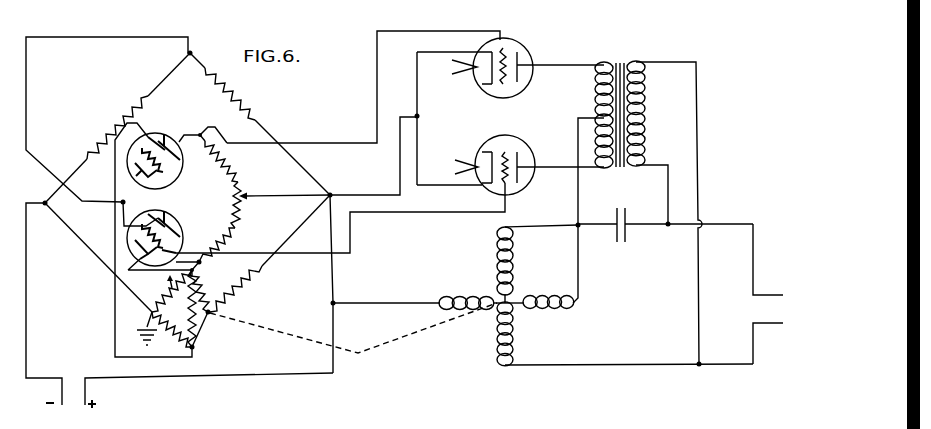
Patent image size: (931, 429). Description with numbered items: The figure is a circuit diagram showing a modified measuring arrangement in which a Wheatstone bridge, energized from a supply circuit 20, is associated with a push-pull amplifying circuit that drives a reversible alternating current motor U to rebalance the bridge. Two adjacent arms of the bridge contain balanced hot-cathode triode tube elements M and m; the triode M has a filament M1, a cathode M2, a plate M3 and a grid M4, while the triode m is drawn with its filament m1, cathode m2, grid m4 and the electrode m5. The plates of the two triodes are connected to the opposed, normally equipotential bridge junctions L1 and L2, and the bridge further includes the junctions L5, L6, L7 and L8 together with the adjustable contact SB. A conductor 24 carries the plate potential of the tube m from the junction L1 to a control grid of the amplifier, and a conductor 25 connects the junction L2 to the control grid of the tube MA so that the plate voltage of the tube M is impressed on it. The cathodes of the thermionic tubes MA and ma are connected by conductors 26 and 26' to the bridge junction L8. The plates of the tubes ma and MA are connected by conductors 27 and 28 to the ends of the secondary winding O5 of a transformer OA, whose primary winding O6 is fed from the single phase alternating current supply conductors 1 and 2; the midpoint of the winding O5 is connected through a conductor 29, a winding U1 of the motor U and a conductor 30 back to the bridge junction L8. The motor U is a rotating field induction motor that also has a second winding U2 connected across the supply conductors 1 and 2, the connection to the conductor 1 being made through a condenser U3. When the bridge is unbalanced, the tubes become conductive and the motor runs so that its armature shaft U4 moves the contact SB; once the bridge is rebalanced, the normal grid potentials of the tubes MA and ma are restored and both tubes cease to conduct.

The supply circuit 20 is at (26, 102).
The conductor 24 is at (377, 82).
The conductor 25 is at (410, 213).
The conductor 26 is at (373, 156).
The conductor 26' is at (449, 118).
The conductor 27 is at (573, 64).
The conductor 28 is at (548, 166).
The conductor 29 is at (580, 194).
The conductor 30 is at (372, 303).
The supply conductor 1 is at (755, 282).
The supply conductor 2 is at (756, 336).
The bridge junction L1 is at (200, 135).
The bridge junction L2 is at (200, 264).
The bridge junction L5 is at (192, 52).
The bridge junction L6 is at (195, 349).
The bridge junction L7 is at (45, 206).
The bridge junction L8 is at (338, 187).
The contact SB is at (214, 310).
The triode tube element m is at (147, 138).
The filament m1 is at (145, 180).
The cathode m2 is at (168, 171).
The grid m4 is at (175, 156).
The tube electrode m5 is at (164, 134).
The triode tube element M is at (128, 238).
The filament M1 is at (143, 212).
The cathode M2 is at (168, 214).
The plate M3 is at (176, 242).
The grid M4 is at (170, 230).
The thermionic tube ma is at (503, 39).
The thermionic tube MA is at (522, 188).
The transformer OA is at (619, 63).
The secondary winding O5 is at (594, 97).
The primary winding O6 is at (645, 114).
The reversible alternating current motor U is at (479, 247).
The motor winding U1 is at (533, 294).
The second motor winding U2 is at (516, 348).
The condenser U3 is at (620, 244).
The armature shaft U4 is at (413, 335).